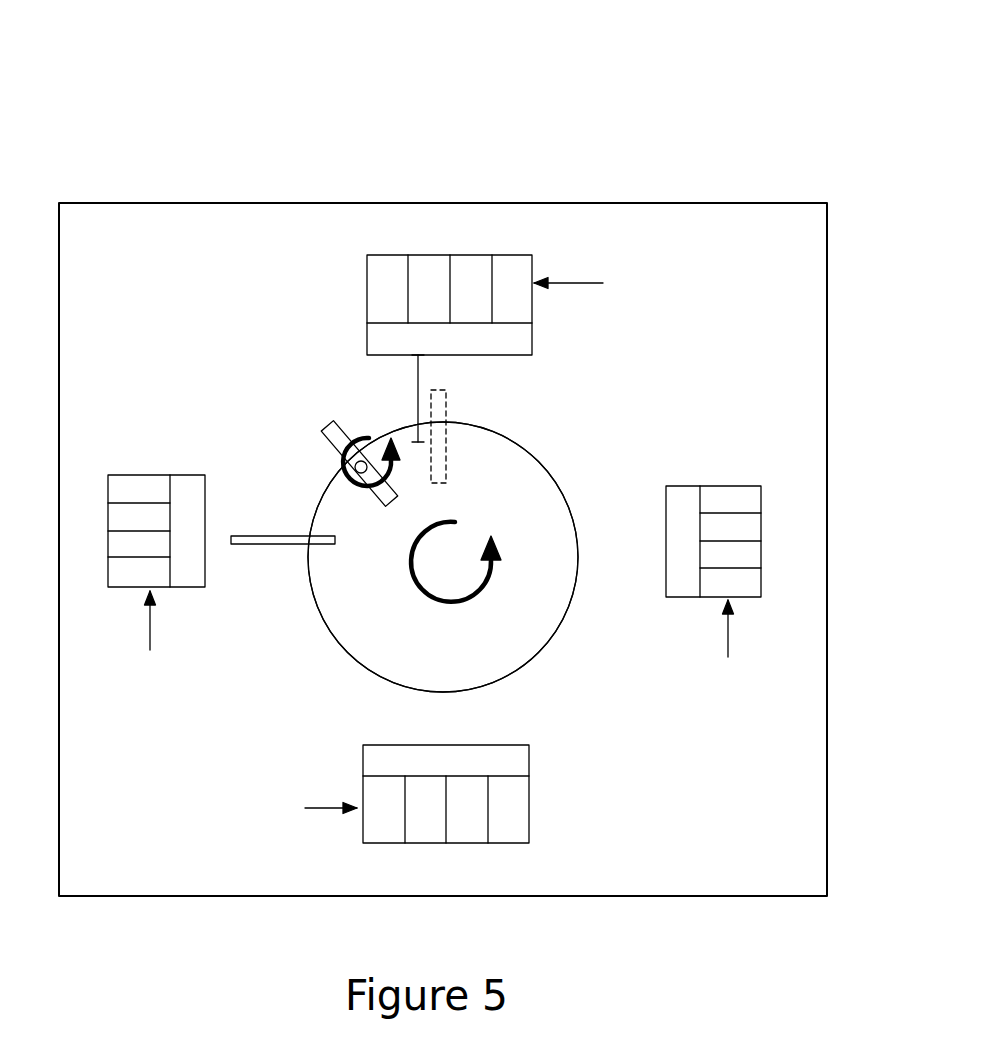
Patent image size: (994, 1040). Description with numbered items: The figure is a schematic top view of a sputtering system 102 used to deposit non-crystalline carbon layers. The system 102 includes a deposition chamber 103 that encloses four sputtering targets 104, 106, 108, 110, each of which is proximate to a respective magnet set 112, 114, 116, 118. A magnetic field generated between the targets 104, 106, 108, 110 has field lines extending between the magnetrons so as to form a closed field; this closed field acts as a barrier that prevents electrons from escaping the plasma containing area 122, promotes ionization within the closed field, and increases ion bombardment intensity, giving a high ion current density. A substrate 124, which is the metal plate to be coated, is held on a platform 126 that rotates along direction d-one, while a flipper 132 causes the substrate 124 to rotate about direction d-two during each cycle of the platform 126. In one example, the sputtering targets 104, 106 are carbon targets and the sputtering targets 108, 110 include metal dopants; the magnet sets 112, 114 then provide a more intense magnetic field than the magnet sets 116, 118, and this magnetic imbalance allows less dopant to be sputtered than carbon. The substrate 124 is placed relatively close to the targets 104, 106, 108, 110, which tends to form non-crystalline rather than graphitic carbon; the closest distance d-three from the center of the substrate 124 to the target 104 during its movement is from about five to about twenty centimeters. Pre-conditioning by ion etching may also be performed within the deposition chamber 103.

The sputtering system 102 is at (588, 137).
The deposition chamber 103 is at (232, 202).
The sputtering target 104 is at (368, 328).
The sputtering target 106 is at (529, 752).
The sputtering target 108 is at (190, 478).
The sputtering target 110 is at (692, 486).
The magnet set 112 is at (589, 284).
The magnet set 114 is at (310, 809).
The magnet set 116 is at (150, 634).
The magnet set 118 is at (728, 642).
The plasma containing area 122 is at (565, 452).
The substrate 124 is at (331, 421).
The platform 126 is at (335, 640).
The flipper 132 is at (280, 536).